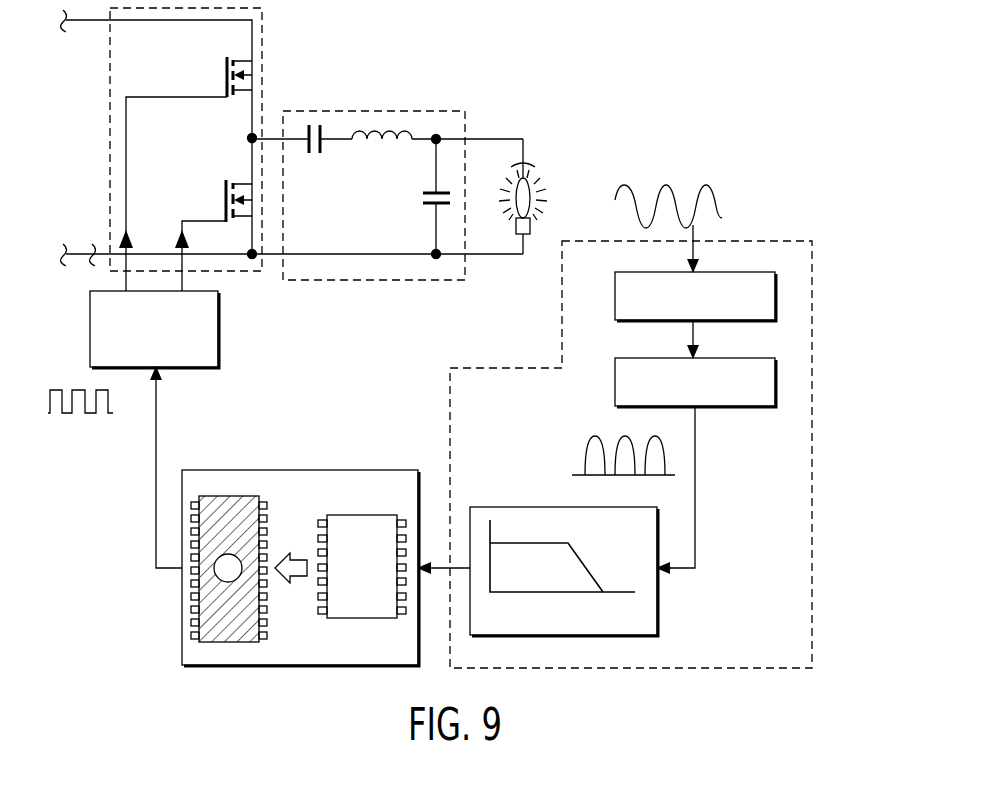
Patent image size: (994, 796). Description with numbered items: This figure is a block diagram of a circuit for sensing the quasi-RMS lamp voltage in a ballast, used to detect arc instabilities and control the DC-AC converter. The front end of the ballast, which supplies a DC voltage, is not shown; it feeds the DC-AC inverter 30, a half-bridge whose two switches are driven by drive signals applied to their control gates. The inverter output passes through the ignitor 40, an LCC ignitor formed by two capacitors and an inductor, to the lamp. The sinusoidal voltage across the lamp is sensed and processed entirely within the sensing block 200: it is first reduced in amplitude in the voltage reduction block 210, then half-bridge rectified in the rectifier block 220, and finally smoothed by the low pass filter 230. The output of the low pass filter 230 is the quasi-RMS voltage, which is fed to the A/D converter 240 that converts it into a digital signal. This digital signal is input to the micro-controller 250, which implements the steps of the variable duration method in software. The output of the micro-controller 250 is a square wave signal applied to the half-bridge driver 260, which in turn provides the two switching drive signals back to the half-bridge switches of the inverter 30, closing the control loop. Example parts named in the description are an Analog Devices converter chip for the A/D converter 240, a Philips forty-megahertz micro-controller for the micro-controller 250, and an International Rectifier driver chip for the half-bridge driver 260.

The DC-AC inverter 30 is at (272, 41).
The ignitor 40 is at (467, 122).
The sensing block 200 is at (813, 462).
The voltage reduction block 210 is at (615, 292).
The half-bridge rectifier block 220 is at (615, 385).
The low pass filter 230 is at (657, 614).
The A/D converter 240 is at (350, 620).
The micro-controller 250 is at (245, 495).
The half-bridge driver 260 is at (218, 333).